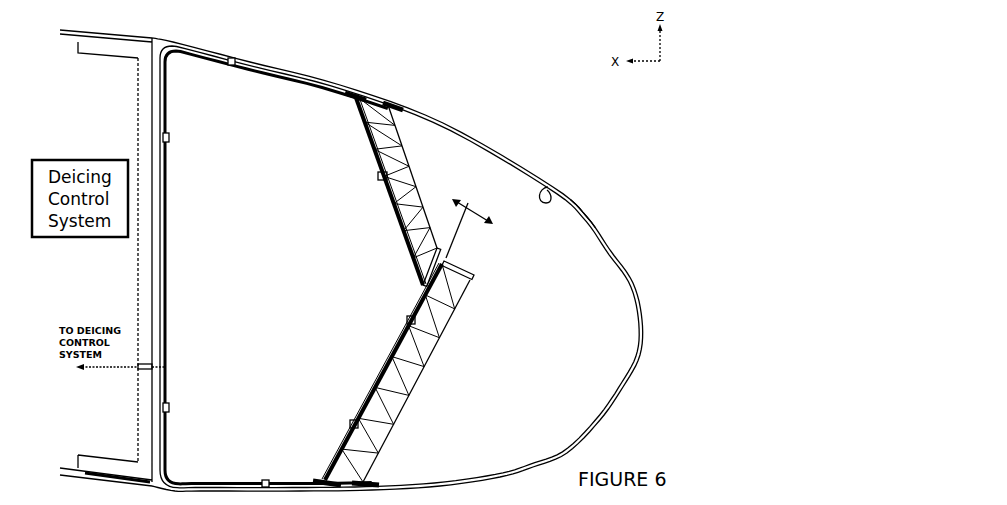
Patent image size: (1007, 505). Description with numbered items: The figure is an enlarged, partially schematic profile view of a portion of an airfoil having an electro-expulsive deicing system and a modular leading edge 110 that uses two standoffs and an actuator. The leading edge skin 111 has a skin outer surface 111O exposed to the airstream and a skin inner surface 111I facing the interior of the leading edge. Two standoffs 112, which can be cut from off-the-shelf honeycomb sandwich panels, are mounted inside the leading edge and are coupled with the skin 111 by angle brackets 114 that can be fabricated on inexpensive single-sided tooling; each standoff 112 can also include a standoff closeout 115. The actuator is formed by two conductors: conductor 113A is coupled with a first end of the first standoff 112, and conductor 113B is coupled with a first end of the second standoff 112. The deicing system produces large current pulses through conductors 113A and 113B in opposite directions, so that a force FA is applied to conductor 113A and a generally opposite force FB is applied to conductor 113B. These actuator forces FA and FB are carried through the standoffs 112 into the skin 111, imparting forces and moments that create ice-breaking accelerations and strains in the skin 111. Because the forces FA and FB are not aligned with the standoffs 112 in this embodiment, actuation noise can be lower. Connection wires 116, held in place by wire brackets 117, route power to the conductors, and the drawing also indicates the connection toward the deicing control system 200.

The modular leading edge 110 is at (547, 150).
The skin 111 is at (610, 250).
The skin outer surface 111O is at (587, 218).
The skin inner surface 111I is at (550, 186).
The standoff 112 is at (396, 206).
The conductor 113A is at (446, 262).
The conductor 113B is at (452, 262).
The angle bracket 114 is at (350, 96).
The standoff closeout 115 is at (412, 261).
The connection wire 116 is at (279, 73).
The wire bracket 117 is at (407, 322).
The wing structure / deicing control wiring 200 is at (139, 32).
The actuator force FA is at (463, 202).
The actuator force FB is at (500, 225).